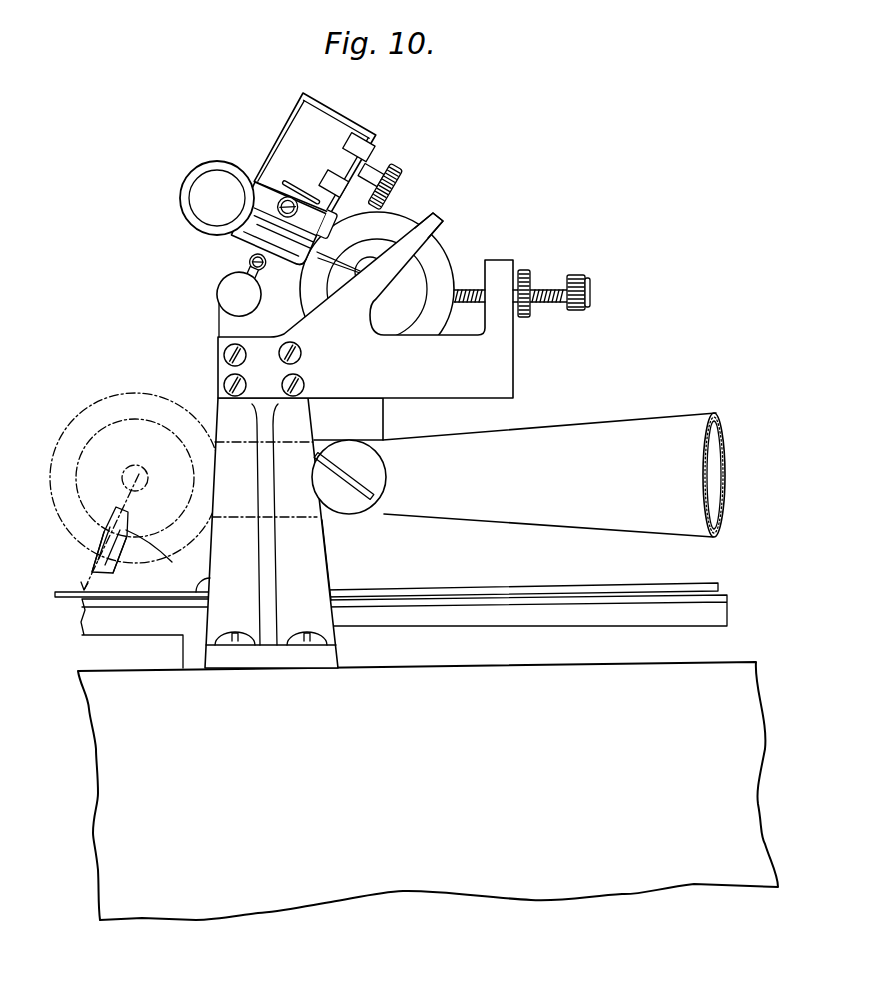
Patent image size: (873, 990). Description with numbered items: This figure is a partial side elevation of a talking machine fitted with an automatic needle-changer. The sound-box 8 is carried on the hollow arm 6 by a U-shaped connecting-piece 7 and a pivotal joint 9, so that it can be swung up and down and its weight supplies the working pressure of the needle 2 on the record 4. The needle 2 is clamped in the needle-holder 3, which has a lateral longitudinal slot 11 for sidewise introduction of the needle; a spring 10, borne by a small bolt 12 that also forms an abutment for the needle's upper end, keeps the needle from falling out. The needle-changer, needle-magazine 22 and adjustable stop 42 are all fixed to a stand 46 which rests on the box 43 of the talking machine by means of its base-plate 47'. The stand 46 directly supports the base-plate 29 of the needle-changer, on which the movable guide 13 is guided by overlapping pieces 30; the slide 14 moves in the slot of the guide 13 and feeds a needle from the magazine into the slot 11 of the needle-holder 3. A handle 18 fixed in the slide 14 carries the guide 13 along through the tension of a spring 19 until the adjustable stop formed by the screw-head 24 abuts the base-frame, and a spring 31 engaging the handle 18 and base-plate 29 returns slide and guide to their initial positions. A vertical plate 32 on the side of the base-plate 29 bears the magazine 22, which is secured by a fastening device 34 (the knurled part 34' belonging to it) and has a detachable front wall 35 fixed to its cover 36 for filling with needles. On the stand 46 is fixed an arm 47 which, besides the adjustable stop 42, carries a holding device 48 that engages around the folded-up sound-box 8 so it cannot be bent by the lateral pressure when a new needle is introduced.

The needle 2 is at (92, 573).
The needle-holder 3 is at (330, 253).
The record 4 is at (402, 593).
The hollow arm 6 is at (554, 475).
The U-shaped connecting-piece 7 is at (373, 415).
The sound-box 8 is at (443, 253).
The pivotal joint 9 is at (349, 477).
The spring 10 is at (125, 565).
The longitudinal slot 11 is at (92, 548).
The small bolt 12 is at (127, 533).
The movable guide 13 is at (277, 203).
The slide 14 is at (230, 238).
The handle 18 is at (239, 294).
The spring 19 is at (316, 224).
The needle-magazine 22 is at (314, 157).
The adjustable stop 24 is at (217, 198).
The base-plate 29 is at (249, 264).
The overlapping pieces 30 is at (300, 268).
The spring 31 is at (247, 269).
The vertical plate 32 is at (376, 140).
The fastening device 34 is at (368, 173).
The thumb knob 34' is at (408, 183).
The front wall 35 is at (288, 121).
The cover 36 is at (347, 119).
The adjustable stop 42 is at (553, 289).
The box 43 is at (428, 791).
The stand 46 is at (318, 563).
The arm 47 is at (386, 305).
The base-plate 47' is at (271, 666).
The holding device 48 is at (447, 216).